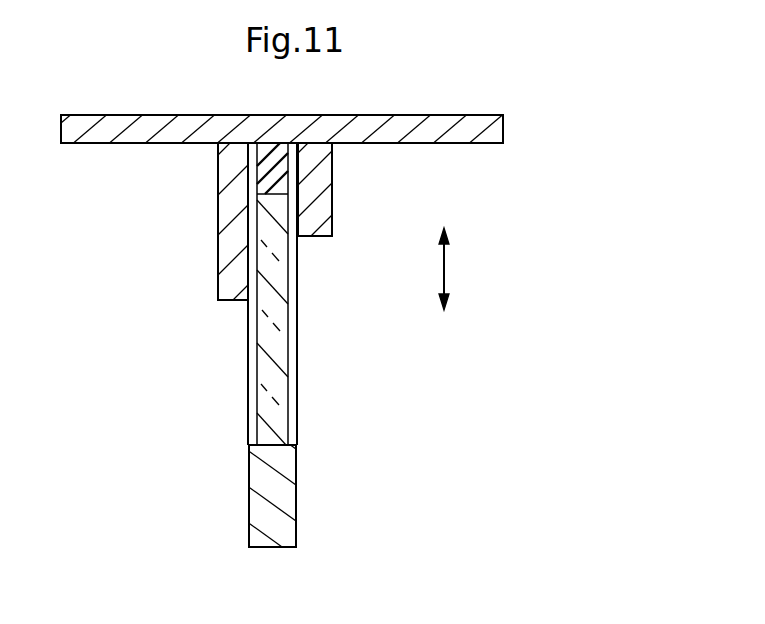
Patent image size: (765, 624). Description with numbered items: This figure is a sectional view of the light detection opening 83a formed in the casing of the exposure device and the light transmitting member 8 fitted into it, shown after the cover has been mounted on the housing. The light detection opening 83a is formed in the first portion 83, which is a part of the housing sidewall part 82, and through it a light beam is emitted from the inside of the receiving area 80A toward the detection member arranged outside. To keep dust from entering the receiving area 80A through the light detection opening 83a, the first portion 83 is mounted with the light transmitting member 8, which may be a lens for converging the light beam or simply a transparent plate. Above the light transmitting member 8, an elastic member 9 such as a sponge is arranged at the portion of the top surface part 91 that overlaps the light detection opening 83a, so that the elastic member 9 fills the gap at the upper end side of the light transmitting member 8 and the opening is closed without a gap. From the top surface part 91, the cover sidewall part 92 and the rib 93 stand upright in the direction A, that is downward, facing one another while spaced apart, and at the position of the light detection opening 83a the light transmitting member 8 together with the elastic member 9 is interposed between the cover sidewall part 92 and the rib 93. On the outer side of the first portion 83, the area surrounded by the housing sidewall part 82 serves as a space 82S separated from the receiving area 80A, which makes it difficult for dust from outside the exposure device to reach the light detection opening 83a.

The top surface part 91 is at (383, 124).
The cover sidewall part 92 is at (230, 234).
The rib 93 is at (330, 214).
The elastic member 9 is at (262, 178).
The light transmitting member 8 is at (291, 345).
The housing sidewall part 82 is at (340, 345).
The light detection opening 83a is at (292, 356).
The first portion 83 is at (288, 490).
The space 82S is at (183, 397).
The receiving area 80A is at (393, 397).
The direction A is at (455, 269).